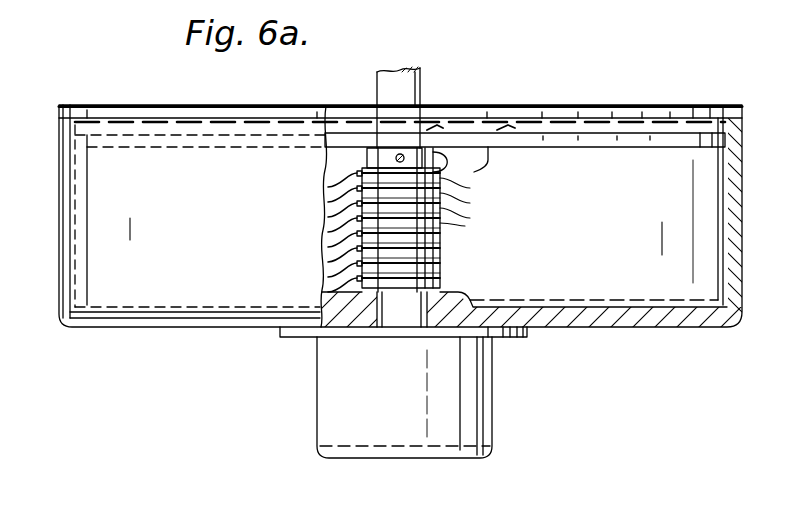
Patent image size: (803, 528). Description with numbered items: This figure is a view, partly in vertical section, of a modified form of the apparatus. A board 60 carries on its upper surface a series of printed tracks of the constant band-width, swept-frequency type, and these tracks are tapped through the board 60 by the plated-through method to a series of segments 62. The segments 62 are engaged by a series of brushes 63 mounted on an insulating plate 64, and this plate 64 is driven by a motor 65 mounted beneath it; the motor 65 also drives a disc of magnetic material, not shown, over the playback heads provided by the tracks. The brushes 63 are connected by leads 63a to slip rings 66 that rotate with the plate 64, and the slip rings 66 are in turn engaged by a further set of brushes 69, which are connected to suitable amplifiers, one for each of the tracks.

The board 60 is at (708, 107).
The segments 62 is at (653, 120).
The brushes 63 is at (440, 127).
The leads 63a is at (468, 172).
The insulating plate 64 is at (663, 148).
The motor 65 is at (404, 397).
The slip rings 66 is at (443, 233).
The brushes 69 is at (327, 172).